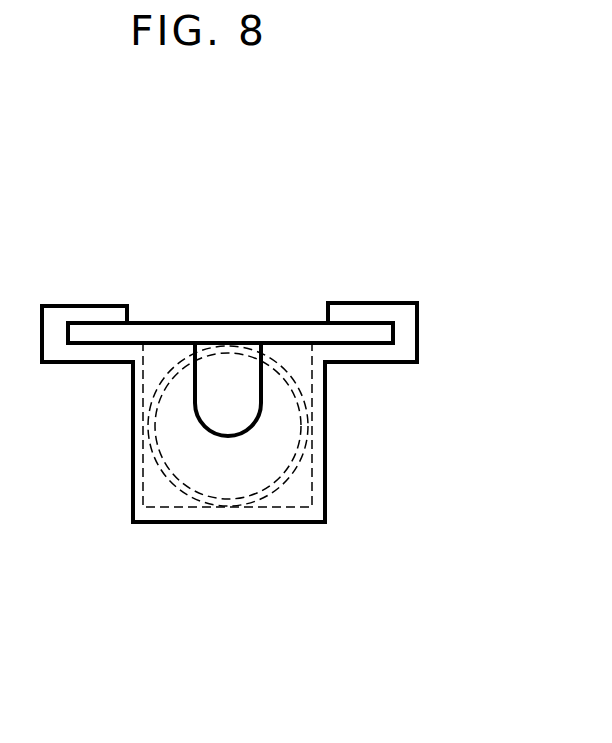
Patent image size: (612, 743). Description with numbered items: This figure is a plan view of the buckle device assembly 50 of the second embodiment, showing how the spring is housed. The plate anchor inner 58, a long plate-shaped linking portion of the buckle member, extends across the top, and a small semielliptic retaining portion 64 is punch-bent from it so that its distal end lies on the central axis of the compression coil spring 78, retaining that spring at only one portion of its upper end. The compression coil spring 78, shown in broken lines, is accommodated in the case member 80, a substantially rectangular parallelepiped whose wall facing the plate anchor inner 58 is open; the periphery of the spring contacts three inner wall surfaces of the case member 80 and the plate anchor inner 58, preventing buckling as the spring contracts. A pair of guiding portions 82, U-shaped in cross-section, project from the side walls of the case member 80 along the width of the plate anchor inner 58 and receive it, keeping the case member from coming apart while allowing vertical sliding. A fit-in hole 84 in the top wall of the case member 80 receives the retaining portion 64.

The seal retaining member 50 is at (246, 194).
The guiding portion 82 is at (75, 305).
The plate anchor inner 58 is at (293, 322).
The retaining portion 64 is at (220, 392).
The fit-in hole 84 is at (258, 400).
The compression coil spring 78 is at (305, 474).
The case member 80 is at (253, 523).